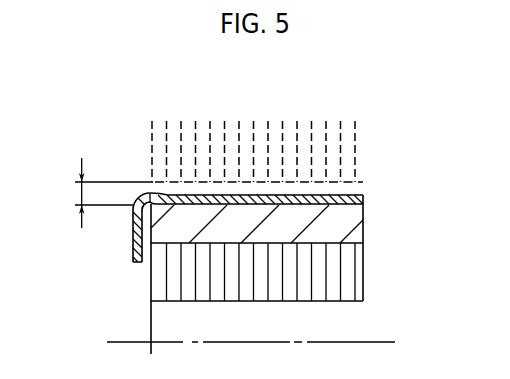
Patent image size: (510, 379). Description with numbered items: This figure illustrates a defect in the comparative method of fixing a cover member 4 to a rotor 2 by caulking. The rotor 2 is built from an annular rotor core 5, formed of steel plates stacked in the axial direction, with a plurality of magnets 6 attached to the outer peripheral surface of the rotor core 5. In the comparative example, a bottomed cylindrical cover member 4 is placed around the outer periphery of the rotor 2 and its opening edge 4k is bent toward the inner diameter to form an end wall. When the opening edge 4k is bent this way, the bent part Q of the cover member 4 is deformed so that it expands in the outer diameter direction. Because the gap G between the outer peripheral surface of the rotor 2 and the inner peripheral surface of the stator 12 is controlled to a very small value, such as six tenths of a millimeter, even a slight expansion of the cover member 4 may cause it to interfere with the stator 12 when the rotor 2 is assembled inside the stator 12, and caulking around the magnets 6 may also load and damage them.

The stator 12 is at (151, 138).
The cover member 4 is at (290, 196).
The rotor 2 is at (312, 205).
The opening edge 4k is at (138, 262).
The magnet 6 is at (322, 227).
The rotor core 5 is at (318, 271).
The bent part Q is at (141, 194).
The gap G is at (106, 193).